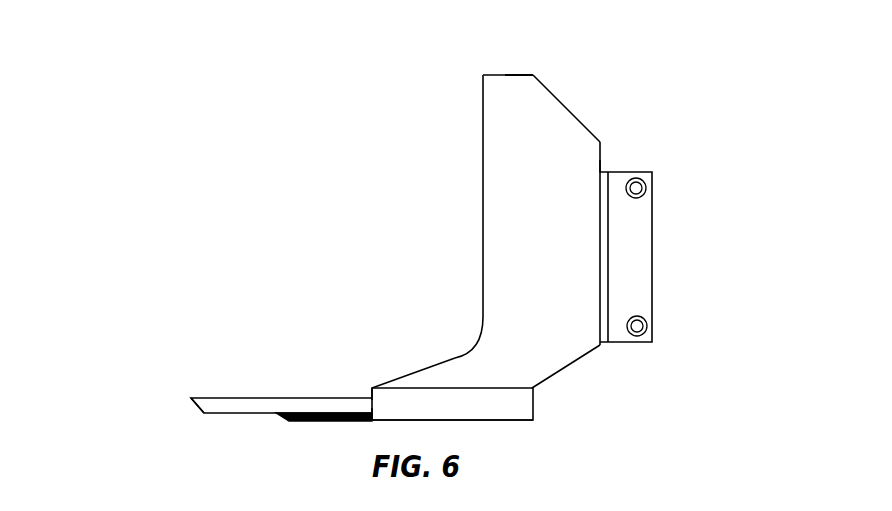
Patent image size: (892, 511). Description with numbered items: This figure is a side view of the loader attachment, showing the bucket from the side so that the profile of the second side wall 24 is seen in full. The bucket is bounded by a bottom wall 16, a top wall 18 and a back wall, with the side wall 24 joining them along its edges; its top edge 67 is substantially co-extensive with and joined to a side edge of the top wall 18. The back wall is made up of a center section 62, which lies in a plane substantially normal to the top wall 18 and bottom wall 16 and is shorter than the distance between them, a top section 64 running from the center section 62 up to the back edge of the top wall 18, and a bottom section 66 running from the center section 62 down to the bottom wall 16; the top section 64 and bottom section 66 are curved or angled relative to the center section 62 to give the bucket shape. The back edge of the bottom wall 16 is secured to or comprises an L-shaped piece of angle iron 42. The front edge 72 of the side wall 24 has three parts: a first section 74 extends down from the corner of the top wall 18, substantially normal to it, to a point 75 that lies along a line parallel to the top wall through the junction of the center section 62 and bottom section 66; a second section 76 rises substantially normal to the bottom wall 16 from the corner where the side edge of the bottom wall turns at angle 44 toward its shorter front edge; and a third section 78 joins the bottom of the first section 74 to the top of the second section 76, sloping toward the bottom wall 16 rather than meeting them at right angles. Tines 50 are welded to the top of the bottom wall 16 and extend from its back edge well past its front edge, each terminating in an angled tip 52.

The bottom wall 16 is at (310, 422).
The top wall 18 is at (508, 74).
The second side wall 24 is at (565, 252).
The L-shaped piece of angle iron 42 is at (517, 410).
The angle 44 is at (363, 418).
The tine 50 is at (253, 402).
The angled tip 52 is at (193, 400).
The center section 62 is at (598, 160).
The top section 64 is at (572, 114).
The bottom section 66 is at (580, 355).
The top edge 67 is at (510, 76).
The front edge 72 is at (468, 219).
The first section 74 is at (483, 143).
The point 75 is at (483, 338).
The second section 76 is at (370, 388).
The third section 78 is at (417, 353).